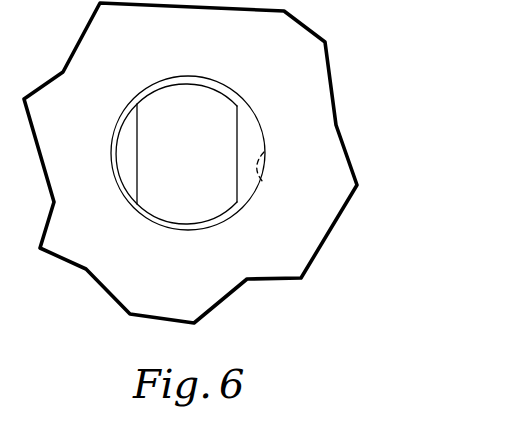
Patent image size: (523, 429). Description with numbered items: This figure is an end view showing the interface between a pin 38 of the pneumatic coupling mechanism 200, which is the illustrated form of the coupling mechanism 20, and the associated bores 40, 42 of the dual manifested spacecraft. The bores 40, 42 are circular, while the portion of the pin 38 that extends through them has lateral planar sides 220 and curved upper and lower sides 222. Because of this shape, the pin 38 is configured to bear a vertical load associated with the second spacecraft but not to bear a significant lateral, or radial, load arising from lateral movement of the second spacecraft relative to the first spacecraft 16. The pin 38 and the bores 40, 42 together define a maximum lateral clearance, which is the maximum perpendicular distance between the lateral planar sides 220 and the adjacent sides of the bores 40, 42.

The first spacecraft 16 is at (183, 276).
The coupling mechanism 20 is at (366, 84).
The pneumatic coupling mechanism 200 is at (341, 124).
The lateral planar sides 220 is at (237, 128).
The curved upper and lower sides 222 is at (207, 85).
The pin 38 is at (199, 165).
The bore 40 is at (242, 206).
The bore 42 is at (265, 154).